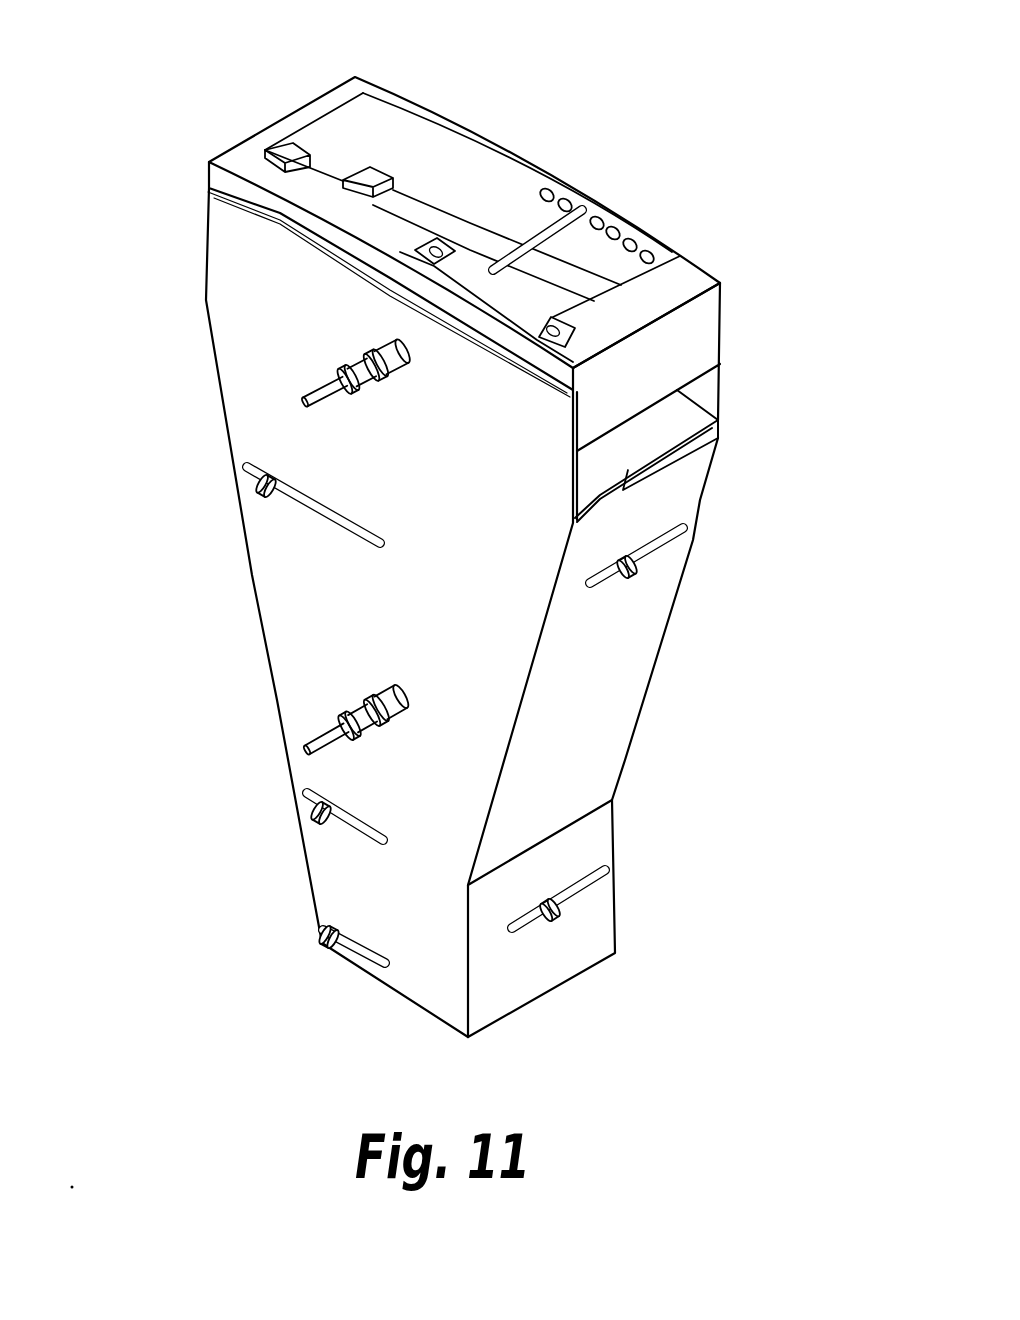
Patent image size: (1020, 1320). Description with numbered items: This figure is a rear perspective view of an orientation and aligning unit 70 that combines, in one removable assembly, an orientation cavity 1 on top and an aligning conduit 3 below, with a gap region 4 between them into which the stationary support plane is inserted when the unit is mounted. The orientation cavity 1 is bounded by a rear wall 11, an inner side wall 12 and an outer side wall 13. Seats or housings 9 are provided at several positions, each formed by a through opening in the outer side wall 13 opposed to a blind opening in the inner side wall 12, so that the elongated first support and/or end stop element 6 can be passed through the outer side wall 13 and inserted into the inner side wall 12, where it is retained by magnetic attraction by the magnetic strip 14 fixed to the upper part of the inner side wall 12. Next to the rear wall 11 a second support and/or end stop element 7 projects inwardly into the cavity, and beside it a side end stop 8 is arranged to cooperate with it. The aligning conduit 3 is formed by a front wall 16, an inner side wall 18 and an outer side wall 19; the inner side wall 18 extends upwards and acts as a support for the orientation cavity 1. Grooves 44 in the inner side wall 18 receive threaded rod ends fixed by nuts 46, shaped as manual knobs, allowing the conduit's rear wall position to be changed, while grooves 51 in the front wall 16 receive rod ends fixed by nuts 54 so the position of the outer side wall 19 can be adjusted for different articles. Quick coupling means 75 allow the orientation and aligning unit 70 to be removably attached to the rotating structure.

The orientation cavity 1 is at (447, 167).
The aligning conduit 3 is at (622, 893).
The ledge / recess 4 is at (662, 428).
The first support and/or end stop element 6 is at (540, 233).
The second support and/or end stop element 7 is at (363, 177).
The side end stop 8 is at (290, 150).
The seats or housings 9 is at (630, 207).
The rear wall 11 is at (307, 117).
The inner side wall 12 is at (653, 290).
The outer side wall 13 is at (497, 147).
The magnetic strip 14 is at (514, 297).
The front wall 16 is at (627, 672).
The inner side wall 18 is at (290, 622).
The outer side wall 19 is at (718, 420).
The grooves 44 is at (313, 507).
The nuts 46 is at (260, 495).
The grooves 51 is at (670, 550).
The nuts 54 is at (640, 572).
The orientation and aligning unit 70 is at (643, 117).
The quick coupling means 75 is at (340, 373).